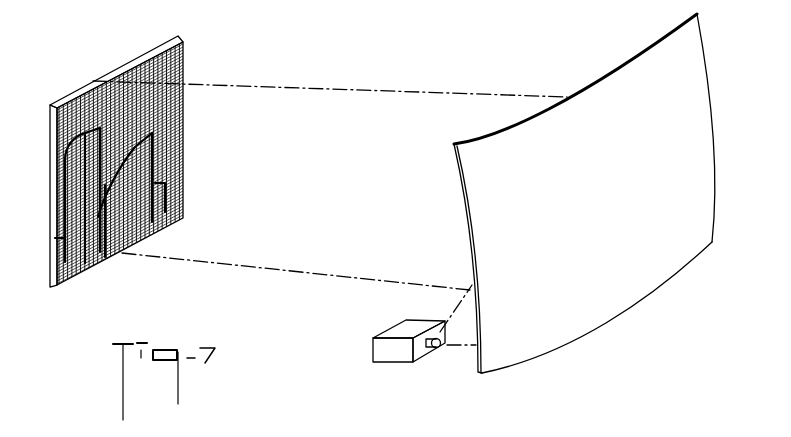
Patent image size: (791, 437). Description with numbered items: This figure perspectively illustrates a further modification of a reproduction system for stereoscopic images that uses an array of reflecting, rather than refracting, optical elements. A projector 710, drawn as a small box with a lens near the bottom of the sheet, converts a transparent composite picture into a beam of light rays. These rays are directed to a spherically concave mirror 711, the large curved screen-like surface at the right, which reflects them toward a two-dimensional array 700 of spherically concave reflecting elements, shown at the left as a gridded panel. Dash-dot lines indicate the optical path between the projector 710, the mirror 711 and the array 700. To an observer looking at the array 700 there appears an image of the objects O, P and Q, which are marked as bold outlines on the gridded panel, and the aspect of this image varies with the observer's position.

The two-dimensional array of spherically concave reflecting elements 700 is at (82, 87).
The projector 710 is at (393, 356).
The spherically concave mirror 711 is at (630, 309).
The object P is at (77, 158).
The object O is at (152, 150).
The object Q is at (160, 210).